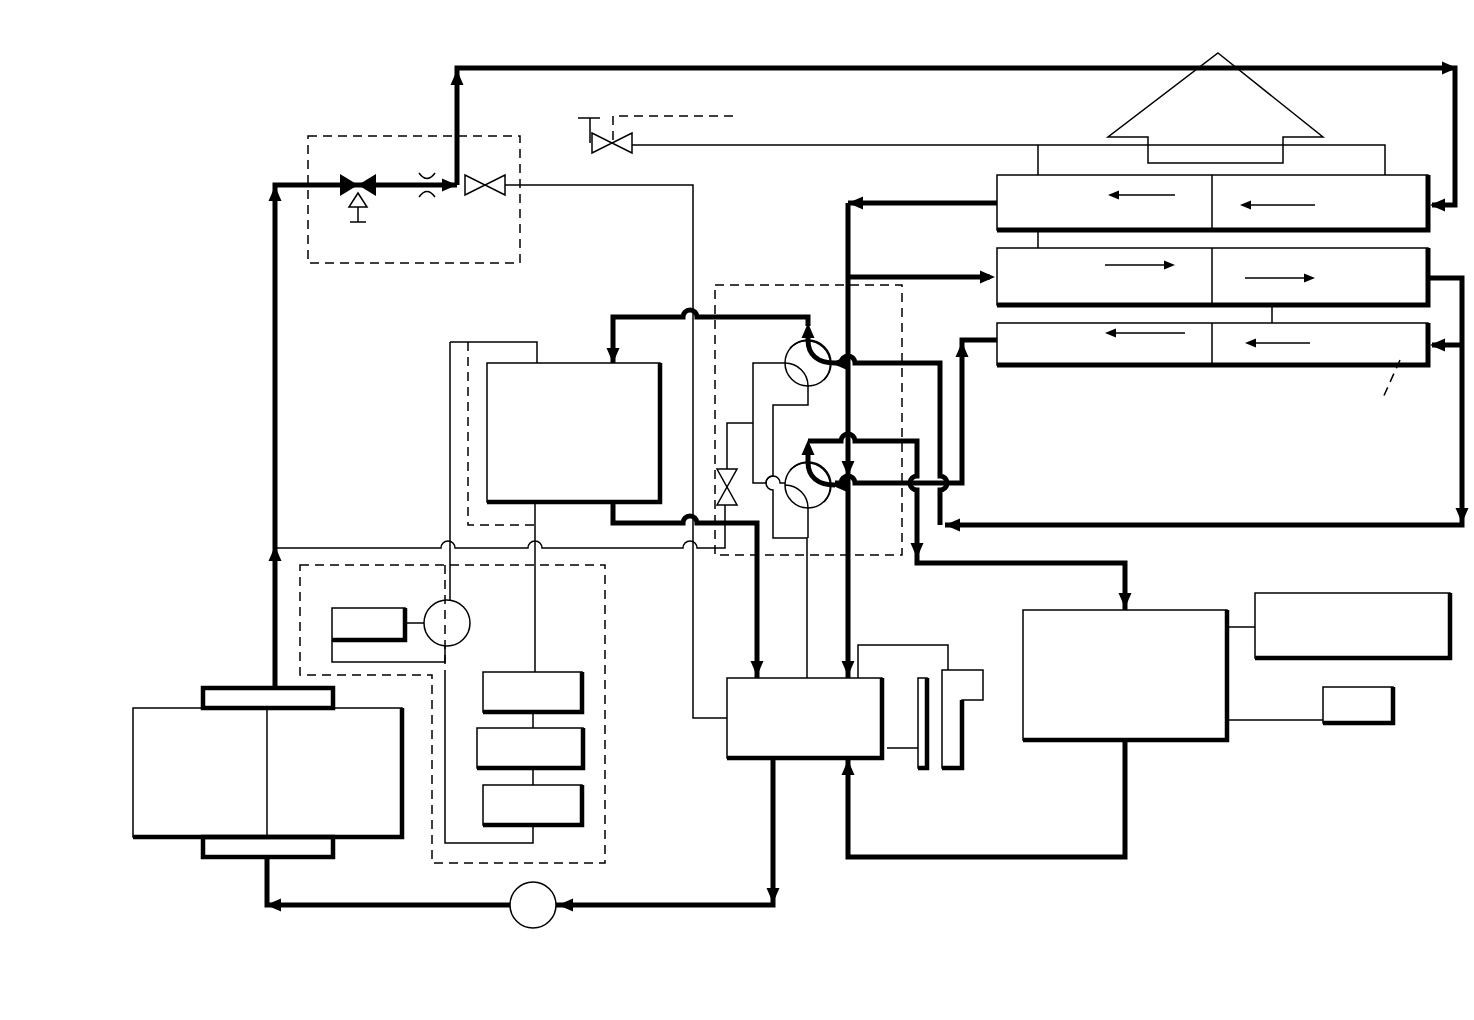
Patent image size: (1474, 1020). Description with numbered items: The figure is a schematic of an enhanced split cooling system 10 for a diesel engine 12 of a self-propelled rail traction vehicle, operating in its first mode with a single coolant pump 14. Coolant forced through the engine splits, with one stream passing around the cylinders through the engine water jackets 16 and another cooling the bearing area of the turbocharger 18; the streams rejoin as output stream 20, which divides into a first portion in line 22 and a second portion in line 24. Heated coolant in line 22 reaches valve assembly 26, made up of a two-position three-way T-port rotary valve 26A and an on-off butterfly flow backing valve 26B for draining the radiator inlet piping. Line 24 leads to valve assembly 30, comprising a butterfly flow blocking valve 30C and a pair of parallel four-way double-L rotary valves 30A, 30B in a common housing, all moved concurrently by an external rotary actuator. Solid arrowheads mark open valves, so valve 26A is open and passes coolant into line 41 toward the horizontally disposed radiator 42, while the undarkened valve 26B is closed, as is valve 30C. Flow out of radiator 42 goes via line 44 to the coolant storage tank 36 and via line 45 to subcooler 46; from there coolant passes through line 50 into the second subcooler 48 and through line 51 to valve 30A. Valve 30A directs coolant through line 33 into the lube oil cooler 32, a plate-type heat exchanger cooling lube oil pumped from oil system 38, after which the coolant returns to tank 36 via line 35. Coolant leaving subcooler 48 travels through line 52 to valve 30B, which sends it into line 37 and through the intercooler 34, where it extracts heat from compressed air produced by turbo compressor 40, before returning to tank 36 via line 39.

The enhanced split cooling system 10 is at (1322, 59).
The diesel engine 12 is at (267, 751).
The coolant pump 14 is at (556, 893).
The engine water jackets 16 is at (185, 814).
The turbocharger 18 is at (343, 814).
The output stream 20 is at (275, 645).
The line 22 is at (275, 354).
The line 24 is at (343, 548).
The valve assembly 26 is at (415, 136).
The three-way T-port rotary valve 26A is at (358, 175).
The flow backing valve 26B is at (486, 198).
The valve assembly 30 is at (738, 284).
The four-way double-L rotary valve 30A is at (797, 343).
The four-way double-L rotary valve 30B is at (828, 492).
The flow blocking valve 30C is at (722, 497).
The lube oil cooler 32 is at (642, 363).
The line 33 is at (625, 317).
The intercooler 34 is at (1200, 745).
The line 35 is at (757, 637).
The coolant storage tank 36 is at (758, 760).
The line 37 is at (1003, 565).
The oil system 38 is at (605, 808).
The line 39 is at (975, 858).
The turbo compressor 40 is at (1332, 593).
The line 41 is at (935, 67).
The radiator 42 is at (1400, 175).
The line 44 is at (955, 200).
The line 45 is at (903, 278).
The subcooler 46 is at (997, 300).
The second subcooler 48 is at (1072, 366).
The line 50 is at (1445, 355).
The line 51 is at (1462, 500).
The line 52 is at (974, 338).